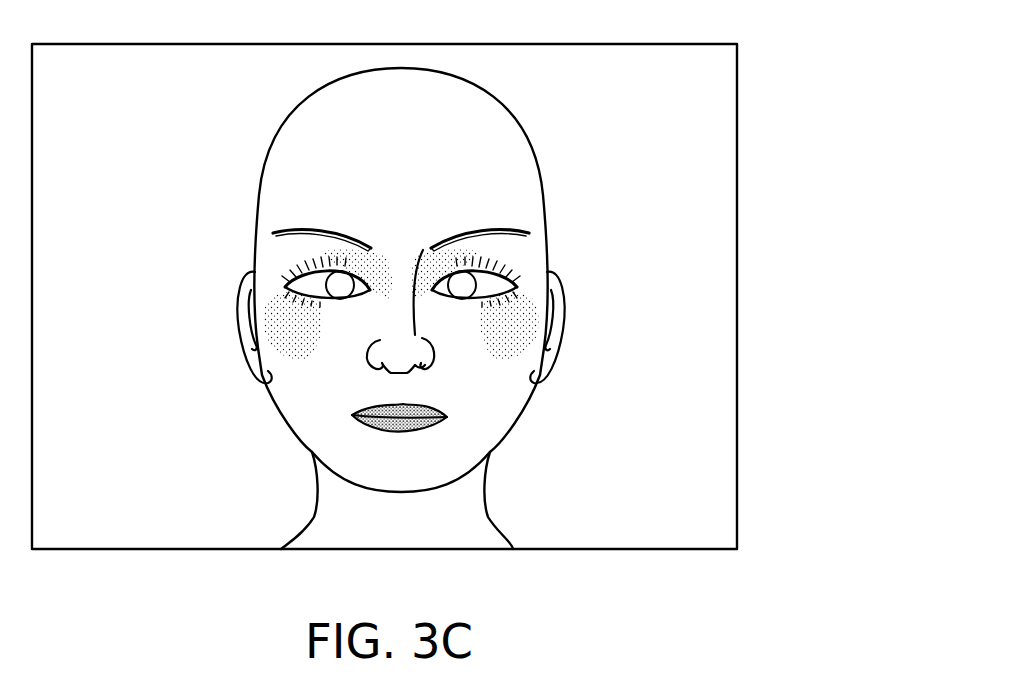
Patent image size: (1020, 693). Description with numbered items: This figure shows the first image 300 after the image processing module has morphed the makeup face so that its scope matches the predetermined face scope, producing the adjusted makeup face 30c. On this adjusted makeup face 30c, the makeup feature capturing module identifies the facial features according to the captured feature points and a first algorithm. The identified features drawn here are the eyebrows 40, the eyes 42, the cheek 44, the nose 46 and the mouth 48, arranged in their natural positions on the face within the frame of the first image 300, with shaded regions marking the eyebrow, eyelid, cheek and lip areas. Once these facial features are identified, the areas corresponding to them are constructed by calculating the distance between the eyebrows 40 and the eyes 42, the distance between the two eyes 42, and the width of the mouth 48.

The first image 300 is at (607, 44).
The adjusted makeup face 30c is at (270, 139).
The eyebrows 40 is at (326, 228).
The eyes 42 is at (295, 281).
The cheek 44 is at (282, 322).
The nose 46 is at (370, 347).
The mouth 48 is at (358, 413).